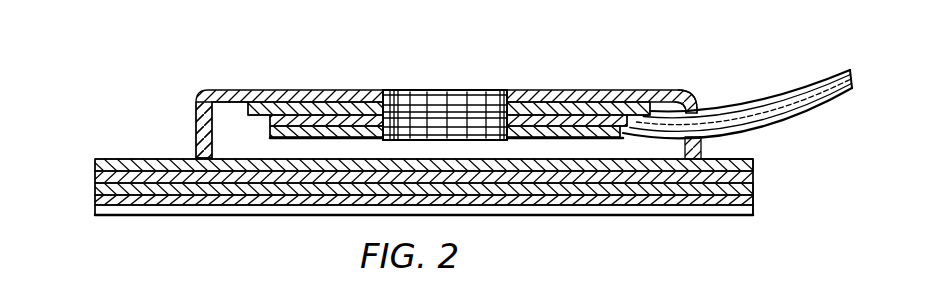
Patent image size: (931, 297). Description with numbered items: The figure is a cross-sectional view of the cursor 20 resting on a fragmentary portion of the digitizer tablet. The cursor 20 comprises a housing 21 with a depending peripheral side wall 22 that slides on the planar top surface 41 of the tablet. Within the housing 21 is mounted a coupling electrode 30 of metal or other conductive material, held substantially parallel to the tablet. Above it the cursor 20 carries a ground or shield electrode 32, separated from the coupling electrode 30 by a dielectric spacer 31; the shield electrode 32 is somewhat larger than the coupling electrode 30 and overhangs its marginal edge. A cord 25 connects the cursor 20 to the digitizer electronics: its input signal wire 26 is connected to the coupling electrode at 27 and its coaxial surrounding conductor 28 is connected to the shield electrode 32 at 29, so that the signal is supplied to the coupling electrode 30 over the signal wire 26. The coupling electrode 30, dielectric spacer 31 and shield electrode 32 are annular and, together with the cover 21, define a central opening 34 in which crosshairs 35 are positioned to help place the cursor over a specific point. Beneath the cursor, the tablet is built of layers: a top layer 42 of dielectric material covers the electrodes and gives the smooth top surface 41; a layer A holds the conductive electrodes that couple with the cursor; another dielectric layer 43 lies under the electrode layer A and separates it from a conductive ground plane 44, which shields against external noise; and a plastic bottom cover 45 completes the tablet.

The cursor 20 is at (435, 99).
The housing 21 is at (258, 89).
The depending peripheral side wall 22 is at (197, 128).
The cord 25 is at (737, 96).
The input signal wire 26 is at (673, 135).
The connection of signal wire to coupling electrode 27 is at (645, 112).
The coaxial surrounding conductor 28 is at (683, 88).
The connection of coaxial conductor to shield electrode 29 is at (658, 104).
The coupling electrode 30 is at (431, 97).
The dielectric spacer 31 is at (434, 140).
The shield electrode 32 is at (241, 123).
The central opening 34 is at (497, 91).
The crosshairs 35 is at (455, 133).
The planar top surface 41 is at (113, 158).
The top layer of dielectric material 42 is at (756, 160).
The layer of dielectric material 43 is at (758, 185).
The conductive ground plane 44 is at (100, 197).
The plastic bottom cover 45 is at (151, 210).
The electrode layer A is at (425, 184).